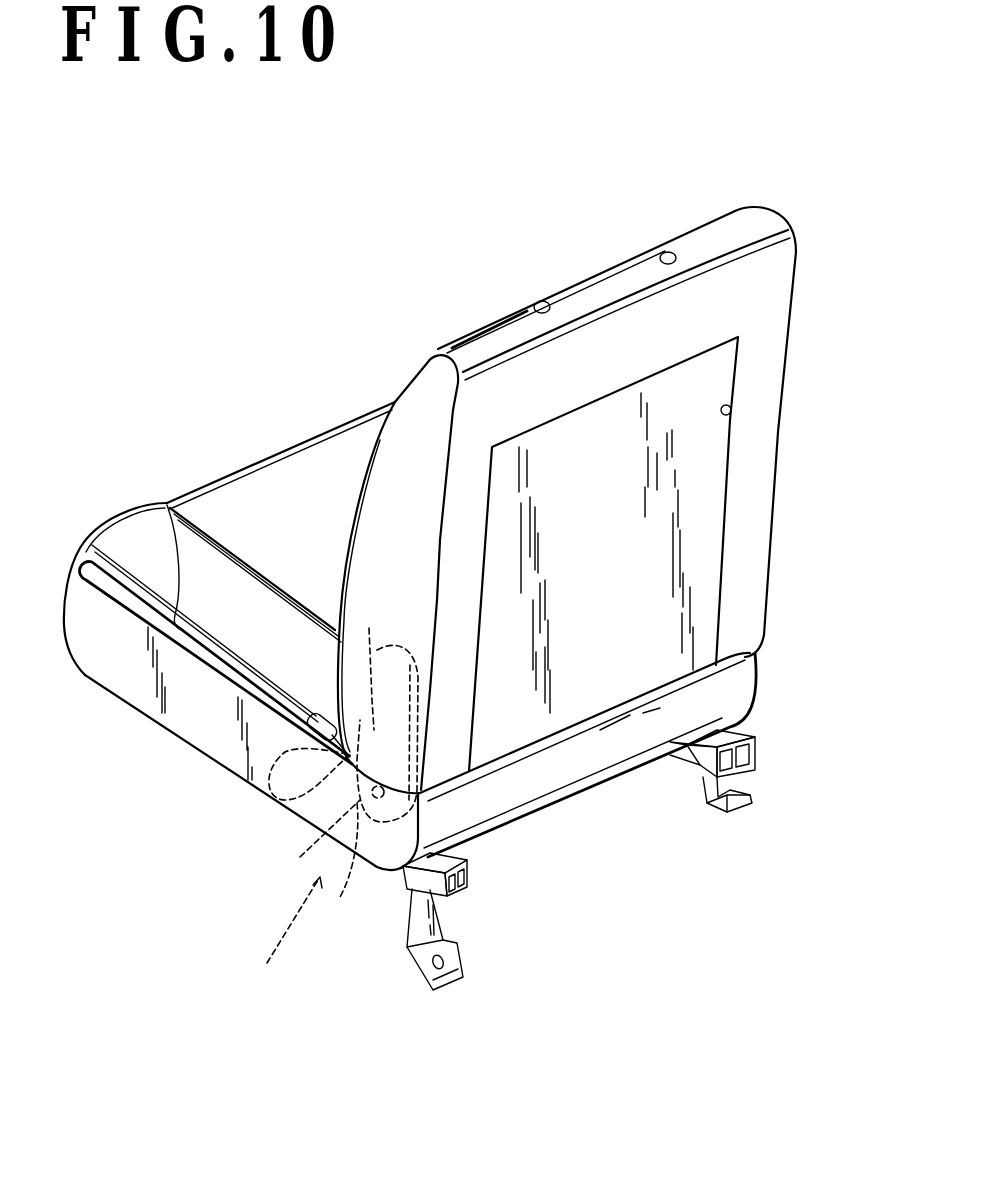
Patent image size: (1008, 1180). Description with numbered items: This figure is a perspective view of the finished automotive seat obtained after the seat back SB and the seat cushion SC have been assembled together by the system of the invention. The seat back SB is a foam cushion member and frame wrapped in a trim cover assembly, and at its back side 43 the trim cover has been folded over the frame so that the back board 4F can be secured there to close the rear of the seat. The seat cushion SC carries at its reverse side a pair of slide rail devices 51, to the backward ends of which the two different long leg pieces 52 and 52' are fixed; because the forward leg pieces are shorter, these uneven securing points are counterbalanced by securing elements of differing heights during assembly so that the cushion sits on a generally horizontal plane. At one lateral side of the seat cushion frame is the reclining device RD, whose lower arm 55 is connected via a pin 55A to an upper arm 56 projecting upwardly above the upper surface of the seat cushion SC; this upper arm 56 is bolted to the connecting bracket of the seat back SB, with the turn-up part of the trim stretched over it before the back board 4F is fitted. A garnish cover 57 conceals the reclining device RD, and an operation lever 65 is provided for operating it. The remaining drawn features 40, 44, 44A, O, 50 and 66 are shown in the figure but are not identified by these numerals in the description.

The seat back SB is at (467, 328).
The seat cushion SC is at (237, 468).
The side bolster of seat back 40 is at (393, 490).
The back side of seat back 43 is at (673, 317).
The upper roll of seat back 44 is at (600, 280).
The holes in seat back roll 44A is at (541, 300).
The back board 4F is at (690, 538).
The opening O is at (731, 408).
The front roll of seat cushion 50 is at (123, 520).
The slide rail device 51 is at (743, 736).
The long leg piece 52 is at (482, 939).
The long leg piece 52' is at (798, 810).
The lower arm of reclining device 55 is at (290, 803).
The pin 55A is at (354, 867).
The upper arm of reclining device 56 is at (312, 850).
The garnish cover 57 is at (155, 707).
The operation lever 65 is at (317, 723).
The hidden hinge 66 is at (387, 702).
The reclining device RD is at (279, 942).